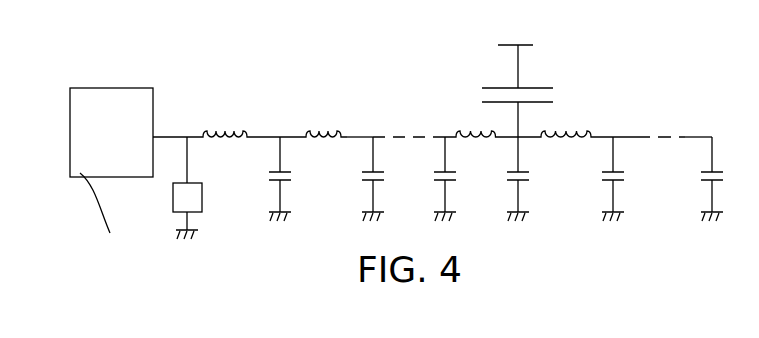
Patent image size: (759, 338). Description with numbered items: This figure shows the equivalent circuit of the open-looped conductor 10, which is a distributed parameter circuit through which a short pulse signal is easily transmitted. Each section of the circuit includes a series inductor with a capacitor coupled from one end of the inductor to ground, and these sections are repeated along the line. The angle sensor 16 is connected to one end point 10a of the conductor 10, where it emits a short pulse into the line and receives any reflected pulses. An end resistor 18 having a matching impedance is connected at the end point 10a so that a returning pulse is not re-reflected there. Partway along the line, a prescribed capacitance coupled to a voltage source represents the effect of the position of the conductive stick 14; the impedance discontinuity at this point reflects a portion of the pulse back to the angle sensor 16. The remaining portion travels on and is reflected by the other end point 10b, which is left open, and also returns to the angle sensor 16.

The angle sensor 16 is at (117, 88).
The end point 10a is at (192, 129).
The end resistor 18 is at (173, 195).
The looped conductor 10 is at (372, 133).
The conductive stick 14 is at (508, 44).
The other end point 10b is at (712, 131).